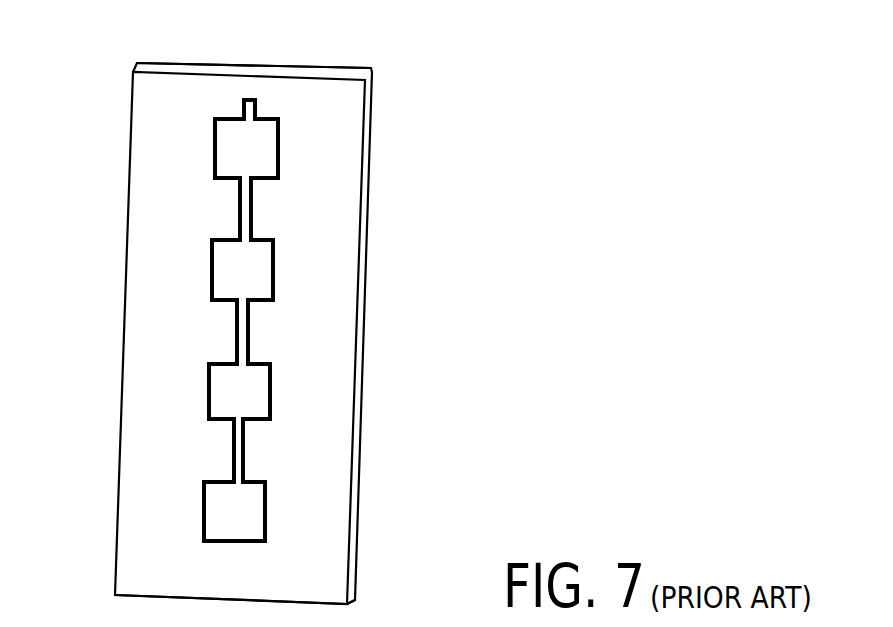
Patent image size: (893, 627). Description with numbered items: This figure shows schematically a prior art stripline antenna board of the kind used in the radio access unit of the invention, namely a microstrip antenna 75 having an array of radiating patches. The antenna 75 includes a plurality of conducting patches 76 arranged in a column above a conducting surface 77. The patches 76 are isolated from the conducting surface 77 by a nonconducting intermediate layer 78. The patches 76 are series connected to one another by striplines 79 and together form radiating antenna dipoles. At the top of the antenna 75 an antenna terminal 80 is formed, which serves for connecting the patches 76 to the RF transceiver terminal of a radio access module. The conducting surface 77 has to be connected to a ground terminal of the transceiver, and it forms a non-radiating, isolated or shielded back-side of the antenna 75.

The microstrip antenna 75 is at (380, 319).
The conducting patches 76 is at (225, 272).
The conducting surface 77 is at (370, 177).
The nonconducting intermediate layer 78 is at (345, 528).
The striplines 79 is at (243, 204).
The antenna terminal 80 is at (247, 107).